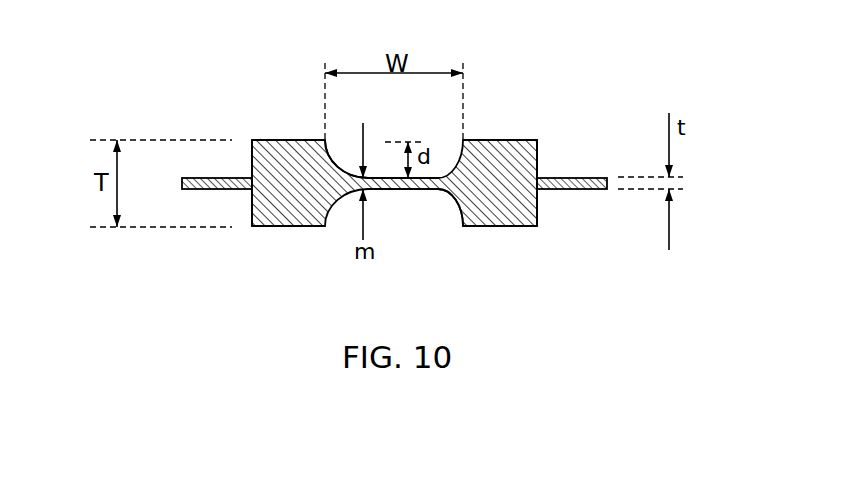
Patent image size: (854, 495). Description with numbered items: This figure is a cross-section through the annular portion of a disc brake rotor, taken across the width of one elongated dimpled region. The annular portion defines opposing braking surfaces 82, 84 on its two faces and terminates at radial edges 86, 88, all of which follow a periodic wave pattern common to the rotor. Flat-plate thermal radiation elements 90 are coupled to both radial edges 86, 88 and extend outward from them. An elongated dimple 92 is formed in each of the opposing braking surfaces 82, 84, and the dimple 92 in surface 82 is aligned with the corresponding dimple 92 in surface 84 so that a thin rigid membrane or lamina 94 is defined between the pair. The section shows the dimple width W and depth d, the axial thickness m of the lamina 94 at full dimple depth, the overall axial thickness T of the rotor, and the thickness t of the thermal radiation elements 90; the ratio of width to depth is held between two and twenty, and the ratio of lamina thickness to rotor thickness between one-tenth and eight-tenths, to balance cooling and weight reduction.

The opposing braking surface 82 is at (275, 140).
The opposing braking surface 84 is at (272, 227).
The radial edge 86 is at (252, 148).
The radial edge 88 is at (538, 152).
The thermal radiation element 90 is at (199, 189).
The elongated dimple 92 is at (331, 148).
The lamina 94 is at (412, 190).